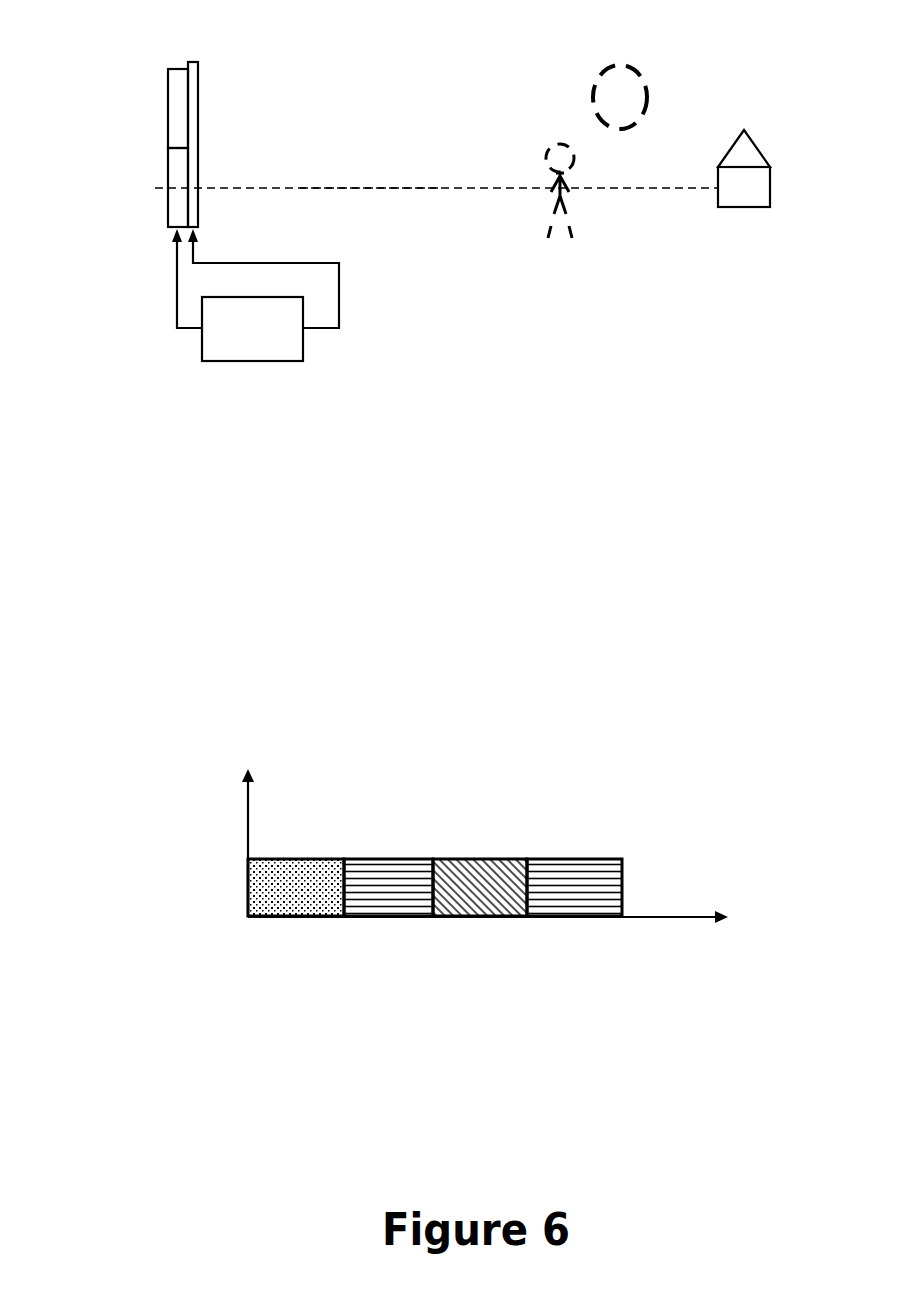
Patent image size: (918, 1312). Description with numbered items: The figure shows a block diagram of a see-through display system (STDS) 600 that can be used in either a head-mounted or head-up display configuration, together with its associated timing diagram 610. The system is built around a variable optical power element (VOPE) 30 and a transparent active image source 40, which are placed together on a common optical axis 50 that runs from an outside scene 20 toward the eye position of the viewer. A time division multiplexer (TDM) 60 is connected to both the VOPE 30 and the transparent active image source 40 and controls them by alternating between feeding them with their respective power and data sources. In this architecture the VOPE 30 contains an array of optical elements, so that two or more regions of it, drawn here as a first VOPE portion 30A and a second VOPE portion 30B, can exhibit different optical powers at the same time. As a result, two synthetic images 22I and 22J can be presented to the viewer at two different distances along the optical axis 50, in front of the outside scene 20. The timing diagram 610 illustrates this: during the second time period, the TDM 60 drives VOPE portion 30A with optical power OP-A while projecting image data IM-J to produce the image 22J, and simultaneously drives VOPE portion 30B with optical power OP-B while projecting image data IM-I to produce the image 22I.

The outside scene 20 is at (720, 156).
The synthetic image 22I is at (555, 174).
The synthetic image 22J is at (592, 92).
The variable optical power element 30 is at (131, 139).
The VOPE portion 30A is at (167, 108).
The VOPE portion 30B is at (167, 182).
The transparent active image source 40 is at (199, 80).
The common optical axis 50 is at (441, 188).
The time division multiplexer 60 is at (250, 362).
The see-through display system 600 is at (537, 299).
The timing diagram 610 is at (427, 829).